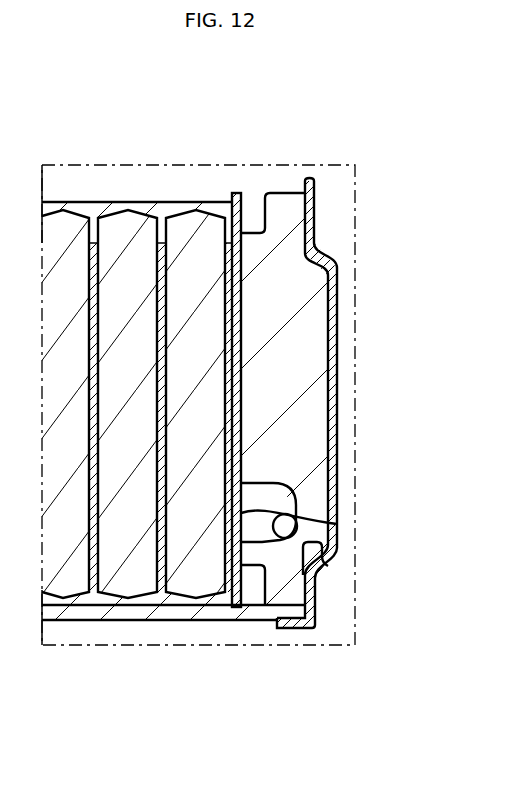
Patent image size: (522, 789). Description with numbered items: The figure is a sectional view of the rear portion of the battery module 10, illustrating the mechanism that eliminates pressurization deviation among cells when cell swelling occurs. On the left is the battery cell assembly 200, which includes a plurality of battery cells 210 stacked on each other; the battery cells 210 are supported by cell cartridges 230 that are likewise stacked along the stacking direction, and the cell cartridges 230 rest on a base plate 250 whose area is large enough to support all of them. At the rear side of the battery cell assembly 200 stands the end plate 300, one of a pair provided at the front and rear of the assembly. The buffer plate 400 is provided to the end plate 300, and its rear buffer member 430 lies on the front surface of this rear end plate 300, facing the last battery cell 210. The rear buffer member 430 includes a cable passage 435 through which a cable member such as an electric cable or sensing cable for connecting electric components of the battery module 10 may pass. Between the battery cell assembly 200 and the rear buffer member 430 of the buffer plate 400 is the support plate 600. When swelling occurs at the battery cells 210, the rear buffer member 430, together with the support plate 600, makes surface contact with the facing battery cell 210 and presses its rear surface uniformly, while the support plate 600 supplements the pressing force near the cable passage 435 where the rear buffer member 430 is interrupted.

The battery module 10 is at (184, 360).
The battery cell assembly 200 is at (173, 406).
The battery cell 210 is at (194, 575).
The cell cartridge 230 is at (156, 600).
The base plate 250 is at (92, 613).
The end plate 300 is at (337, 282).
The buffer plate 400 is at (326, 364).
The rear buffer member 430 is at (295, 373).
The cable passage 435 is at (297, 522).
The support plate 600 is at (337, 524).